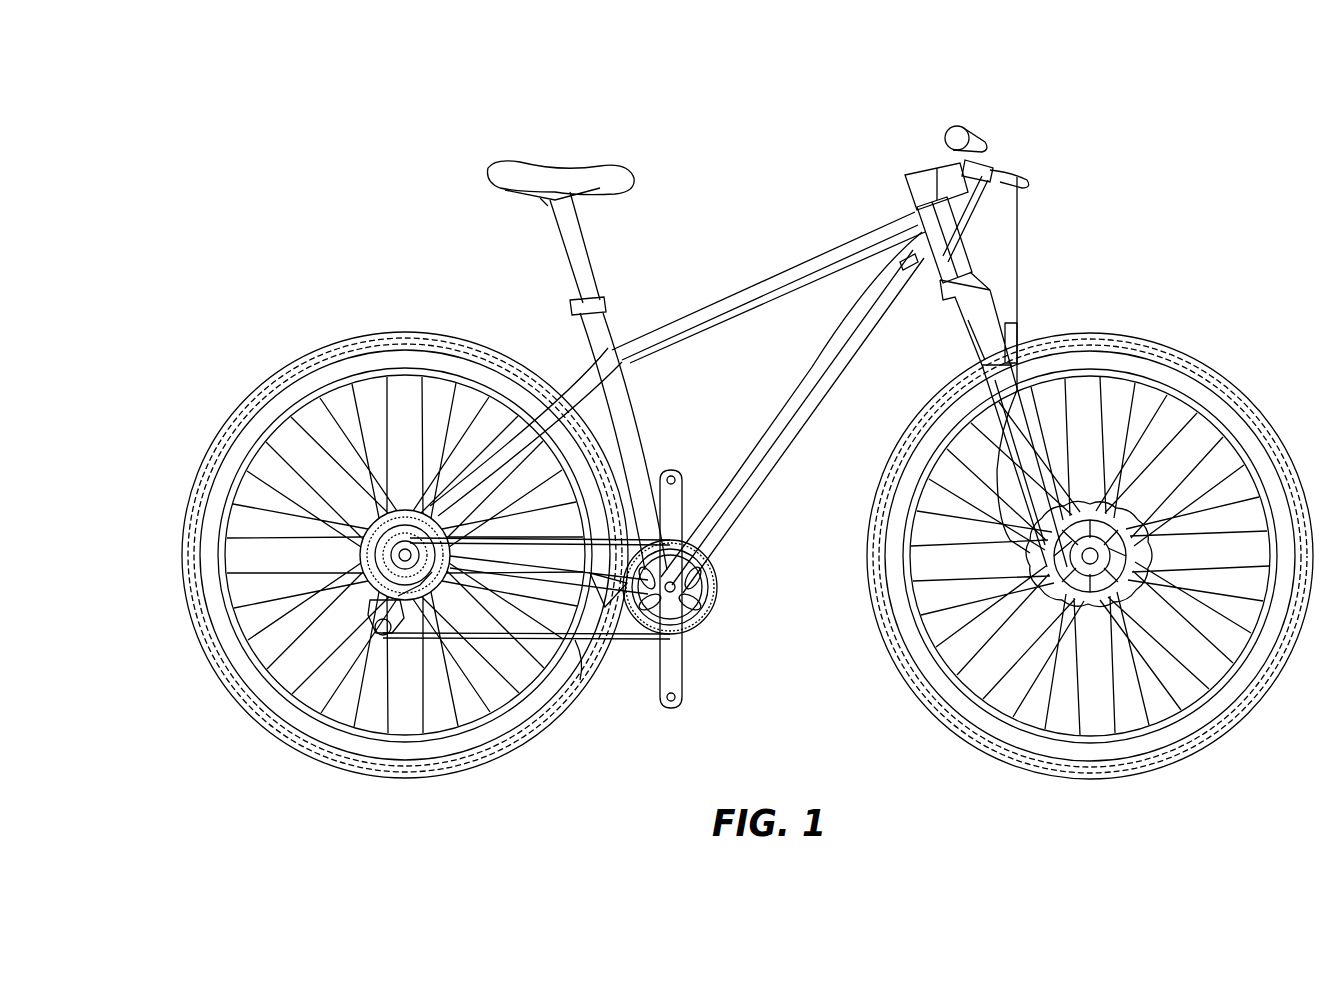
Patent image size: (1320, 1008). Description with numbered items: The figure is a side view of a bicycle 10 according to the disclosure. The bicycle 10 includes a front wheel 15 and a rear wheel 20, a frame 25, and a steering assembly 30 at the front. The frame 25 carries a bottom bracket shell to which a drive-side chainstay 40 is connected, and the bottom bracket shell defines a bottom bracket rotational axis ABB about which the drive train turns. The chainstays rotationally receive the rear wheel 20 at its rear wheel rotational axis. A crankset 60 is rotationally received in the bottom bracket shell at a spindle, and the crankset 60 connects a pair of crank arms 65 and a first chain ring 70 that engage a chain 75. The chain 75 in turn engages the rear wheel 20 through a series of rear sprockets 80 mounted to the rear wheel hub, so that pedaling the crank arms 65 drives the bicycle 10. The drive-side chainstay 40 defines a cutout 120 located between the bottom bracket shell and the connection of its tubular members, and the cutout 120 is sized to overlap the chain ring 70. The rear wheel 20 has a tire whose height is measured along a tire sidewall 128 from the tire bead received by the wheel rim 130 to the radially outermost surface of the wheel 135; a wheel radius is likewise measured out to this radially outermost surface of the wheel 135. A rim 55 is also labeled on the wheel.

The bicycle 10 is at (790, 124).
The front wheel 15 is at (1132, 782).
The rear wheel 20 is at (368, 557).
The frame 25 is at (701, 471).
The steering assembly 30 is at (930, 160).
The drive-side chainstay 40 is at (516, 585).
The rim 55 is at (273, 457).
The crankset 60 is at (700, 640).
The crank arms 65 is at (717, 553).
The first chain ring 70 is at (640, 640).
The chain 75 is at (580, 655).
The rear sprockets 80 is at (403, 503).
The cutout 120 is at (636, 474).
The tire sidewall 128 is at (216, 618).
The wheel rim 130 is at (368, 555).
The radially outermost surface of the wheel 135 is at (180, 587).
The bottom bracket rotational axis ABB is at (674, 588).